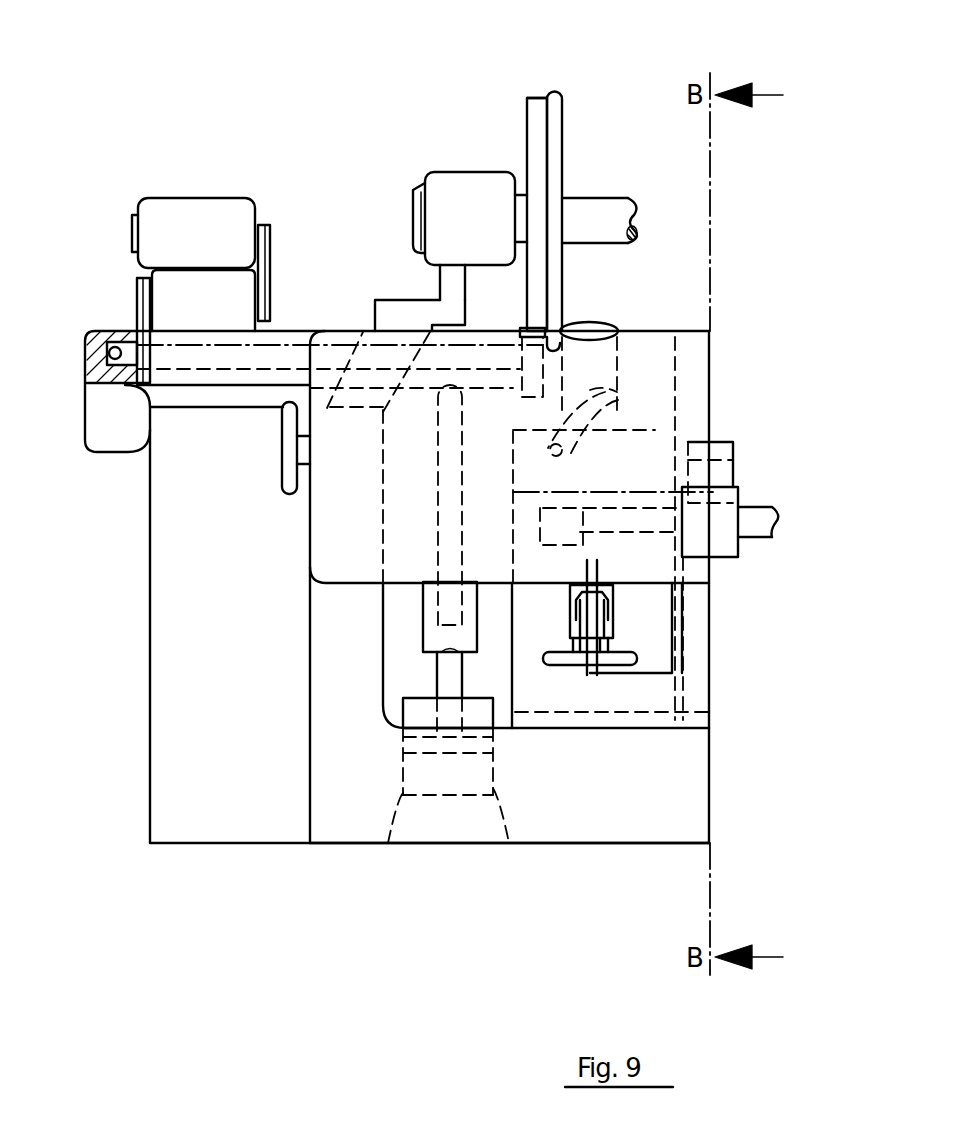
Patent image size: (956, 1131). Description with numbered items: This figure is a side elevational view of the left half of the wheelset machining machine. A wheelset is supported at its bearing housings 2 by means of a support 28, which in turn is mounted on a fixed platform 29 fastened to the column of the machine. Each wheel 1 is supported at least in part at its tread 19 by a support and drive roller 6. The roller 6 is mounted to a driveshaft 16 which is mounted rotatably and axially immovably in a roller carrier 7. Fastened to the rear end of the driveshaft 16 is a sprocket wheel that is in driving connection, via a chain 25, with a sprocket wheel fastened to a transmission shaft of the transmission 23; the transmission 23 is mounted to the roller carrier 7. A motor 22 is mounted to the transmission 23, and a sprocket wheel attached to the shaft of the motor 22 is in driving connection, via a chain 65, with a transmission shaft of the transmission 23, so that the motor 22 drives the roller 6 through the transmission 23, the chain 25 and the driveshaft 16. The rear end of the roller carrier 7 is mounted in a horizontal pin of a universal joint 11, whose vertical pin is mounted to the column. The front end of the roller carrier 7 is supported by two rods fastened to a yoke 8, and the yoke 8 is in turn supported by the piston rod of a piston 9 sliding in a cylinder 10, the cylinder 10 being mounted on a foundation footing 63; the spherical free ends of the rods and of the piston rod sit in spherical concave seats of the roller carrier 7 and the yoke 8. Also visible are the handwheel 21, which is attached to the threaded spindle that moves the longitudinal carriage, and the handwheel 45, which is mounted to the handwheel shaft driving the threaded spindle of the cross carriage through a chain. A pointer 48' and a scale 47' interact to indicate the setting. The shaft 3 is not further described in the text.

The wheel 1 is at (545, 185).
The bearing housing 2 is at (475, 203).
The shaft 3 is at (592, 217).
The support and drive roller 6 is at (520, 397).
The roller carrier 7 is at (280, 333).
The yoke 8 is at (428, 618).
The piston 9 is at (477, 745).
The cylinder 10 is at (498, 786).
The universal joint 11 is at (112, 330).
The driveshaft 16 is at (300, 347).
The tread 19 is at (543, 91).
The handwheel 21 is at (287, 457).
The motor 22 is at (182, 215).
The transmission 23 is at (197, 293).
The chain 25 is at (138, 280).
The support 28 is at (445, 280).
The fixed platform 29 is at (383, 307).
The handwheel 45 is at (566, 666).
The scale 47' is at (636, 646).
The pointer 48' is at (613, 617).
The foundation footing 63 is at (432, 827).
The chain 65 is at (267, 230).